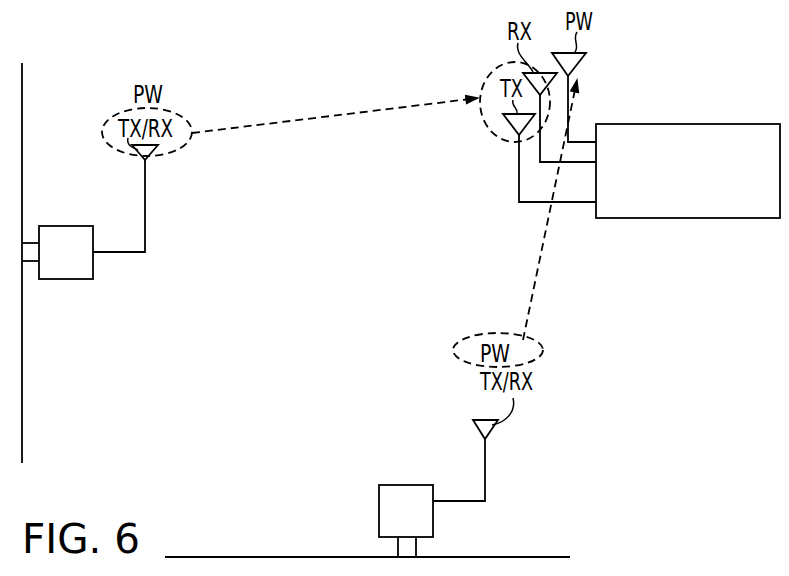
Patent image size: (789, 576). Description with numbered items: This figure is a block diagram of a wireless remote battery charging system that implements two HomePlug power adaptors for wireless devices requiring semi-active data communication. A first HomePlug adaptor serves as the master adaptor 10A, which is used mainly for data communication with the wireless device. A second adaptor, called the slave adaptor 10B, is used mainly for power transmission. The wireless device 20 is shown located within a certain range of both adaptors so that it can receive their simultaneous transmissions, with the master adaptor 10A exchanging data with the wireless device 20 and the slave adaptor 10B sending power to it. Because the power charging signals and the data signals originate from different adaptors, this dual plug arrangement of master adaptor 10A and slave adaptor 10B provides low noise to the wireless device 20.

The master adaptor 10A is at (52, 272).
The slave adaptor 10B is at (392, 500).
The wireless device 20 is at (677, 172).